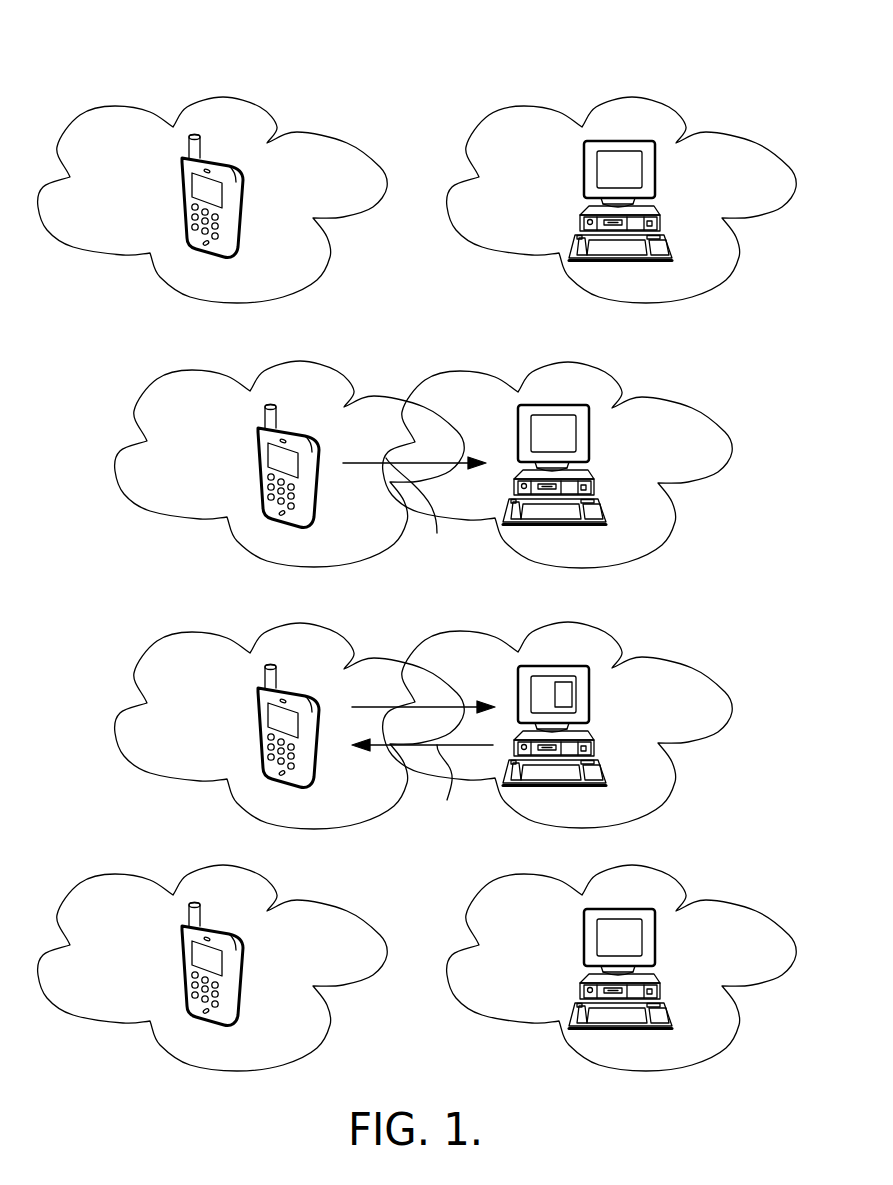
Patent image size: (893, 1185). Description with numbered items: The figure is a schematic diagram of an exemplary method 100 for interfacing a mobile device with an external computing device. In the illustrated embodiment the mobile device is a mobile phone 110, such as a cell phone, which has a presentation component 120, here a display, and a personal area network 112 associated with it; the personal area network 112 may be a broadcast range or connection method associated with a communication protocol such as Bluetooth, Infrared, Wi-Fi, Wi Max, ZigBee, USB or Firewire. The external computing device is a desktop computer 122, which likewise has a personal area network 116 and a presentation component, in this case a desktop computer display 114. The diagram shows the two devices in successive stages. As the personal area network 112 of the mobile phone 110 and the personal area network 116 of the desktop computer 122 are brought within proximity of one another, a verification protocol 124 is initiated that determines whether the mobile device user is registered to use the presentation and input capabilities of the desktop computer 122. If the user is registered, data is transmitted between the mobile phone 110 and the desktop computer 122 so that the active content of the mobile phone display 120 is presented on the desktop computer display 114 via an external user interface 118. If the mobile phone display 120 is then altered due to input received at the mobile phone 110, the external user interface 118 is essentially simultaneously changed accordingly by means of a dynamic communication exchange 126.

The method for interfacing with a mobile device on an external computing device 100 is at (203, 40).
The mobile phone 110 is at (248, 210).
The personal area network 112 is at (317, 130).
The desktop computer display 114 is at (603, 165).
The personal area network 116 is at (730, 130).
The external user interface 118 is at (567, 682).
The presentation component 120 is at (193, 181).
The desktop computer 122 is at (670, 245).
The verification protocol 124 is at (414, 510).
The dynamic communication exchange 126 is at (423, 763).